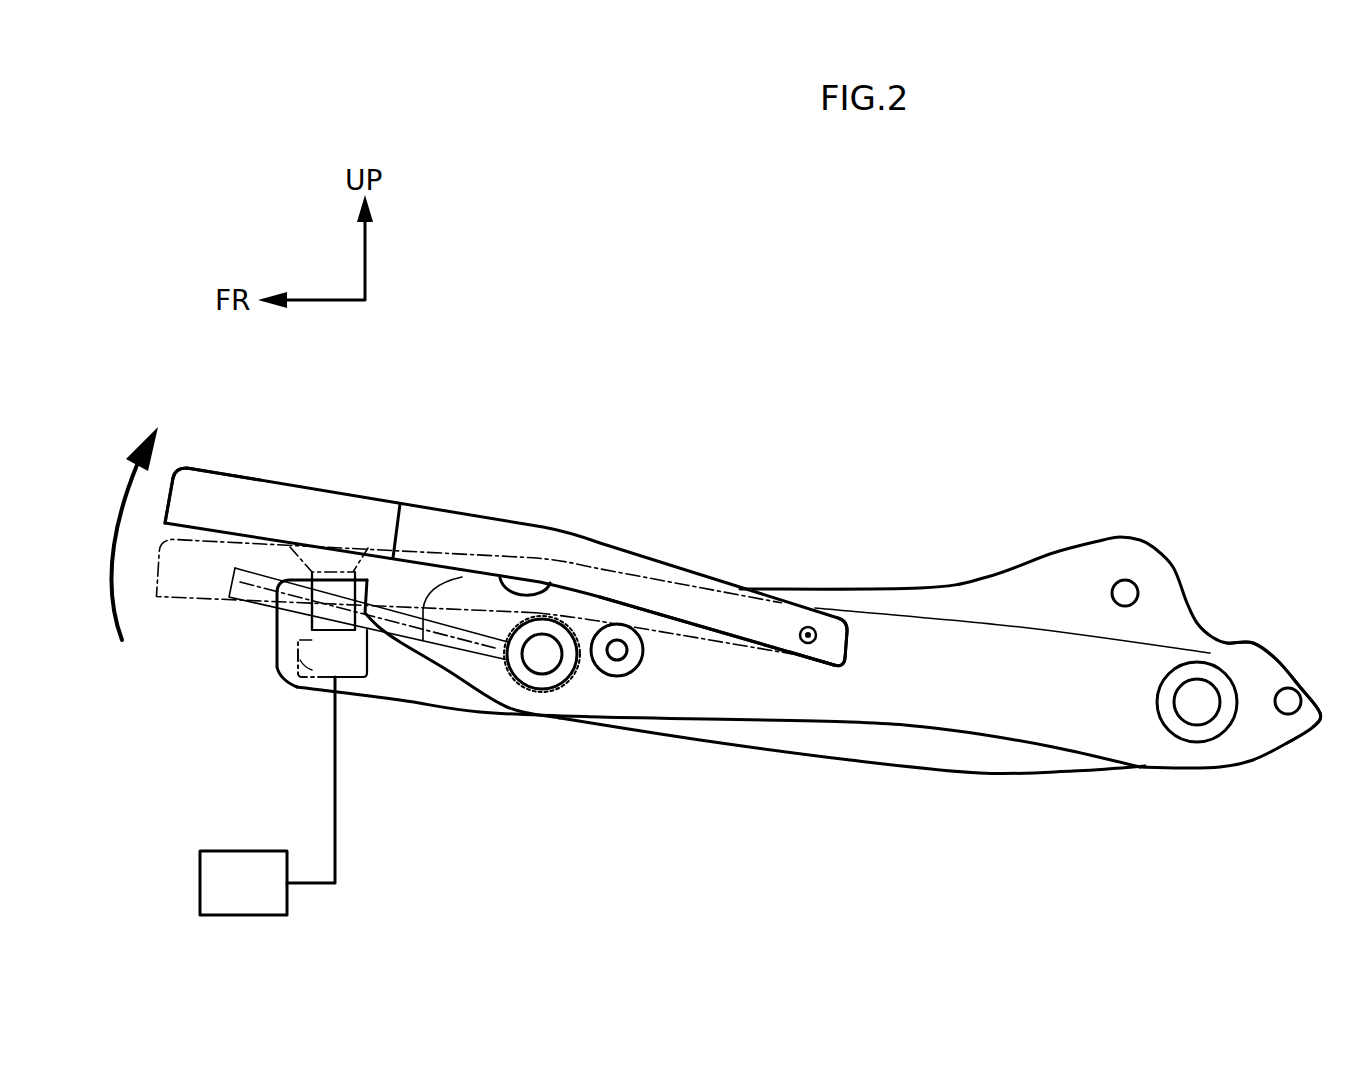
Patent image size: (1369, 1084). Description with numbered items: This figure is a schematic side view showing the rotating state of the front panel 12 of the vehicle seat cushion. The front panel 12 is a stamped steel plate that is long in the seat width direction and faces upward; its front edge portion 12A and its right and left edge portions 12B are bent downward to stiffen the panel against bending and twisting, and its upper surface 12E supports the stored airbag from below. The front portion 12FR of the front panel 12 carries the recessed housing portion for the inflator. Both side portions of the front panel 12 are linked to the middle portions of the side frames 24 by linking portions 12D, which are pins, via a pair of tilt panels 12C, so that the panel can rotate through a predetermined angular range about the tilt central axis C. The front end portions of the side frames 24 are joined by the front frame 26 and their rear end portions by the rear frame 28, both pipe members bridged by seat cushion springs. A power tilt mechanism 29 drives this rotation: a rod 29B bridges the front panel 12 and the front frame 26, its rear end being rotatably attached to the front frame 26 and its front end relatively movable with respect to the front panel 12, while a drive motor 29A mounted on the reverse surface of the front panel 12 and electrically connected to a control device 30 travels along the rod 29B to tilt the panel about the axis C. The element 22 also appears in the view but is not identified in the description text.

The front panel 12 is at (260, 475).
The edge portion on the front side of the front panel 12A is at (165, 530).
The edge portions on both right and left sides of the front panel 12B is at (549, 582).
The tilt panels 12C is at (713, 617).
The linking portions 12D is at (808, 658).
The upper surface of the front panel 12E is at (195, 468).
The front portion of the front panel 12FR is at (225, 468).
The tilt central axis C is at (810, 626).
The arm 22 is at (1278, 550).
The side frames 24 is at (1268, 652).
The front frame 26 is at (557, 682).
The rear frame 28 is at (1193, 735).
The power tilt mechanism 29 is at (384, 678).
The drive motor 29A is at (308, 667).
The rod 29B is at (303, 612).
The control device 30 is at (243, 867).